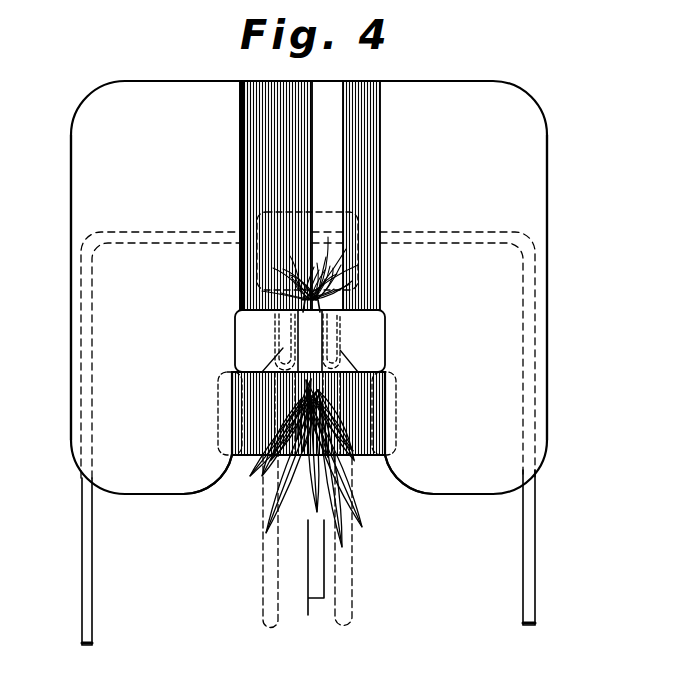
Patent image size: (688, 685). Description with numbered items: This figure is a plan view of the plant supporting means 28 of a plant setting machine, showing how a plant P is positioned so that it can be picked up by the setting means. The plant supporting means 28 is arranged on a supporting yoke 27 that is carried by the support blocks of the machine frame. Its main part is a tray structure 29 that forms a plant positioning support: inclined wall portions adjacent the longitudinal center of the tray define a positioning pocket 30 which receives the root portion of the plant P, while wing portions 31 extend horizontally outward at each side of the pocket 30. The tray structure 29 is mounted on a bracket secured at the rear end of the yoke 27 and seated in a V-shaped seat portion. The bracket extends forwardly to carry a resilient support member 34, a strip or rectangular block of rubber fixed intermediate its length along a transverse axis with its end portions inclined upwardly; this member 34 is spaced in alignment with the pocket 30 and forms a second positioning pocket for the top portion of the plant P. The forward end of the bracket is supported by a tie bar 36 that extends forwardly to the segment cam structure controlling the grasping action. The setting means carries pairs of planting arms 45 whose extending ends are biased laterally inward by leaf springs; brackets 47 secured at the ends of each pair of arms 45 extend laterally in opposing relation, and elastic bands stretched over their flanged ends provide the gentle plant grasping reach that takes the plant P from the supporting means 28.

The supporting yoke 27 is at (538, 537).
The plant supporting means 28 is at (531, 91).
The tray structure 29 is at (172, 80).
The positioning pocket 30 is at (359, 85).
The wing portions 31 is at (84, 154).
The resilient support member 34 is at (240, 468).
The tie bar 36 is at (320, 594).
The planting arms 45 is at (262, 593).
The brackets 47 is at (284, 345).
The plant P is at (348, 462).